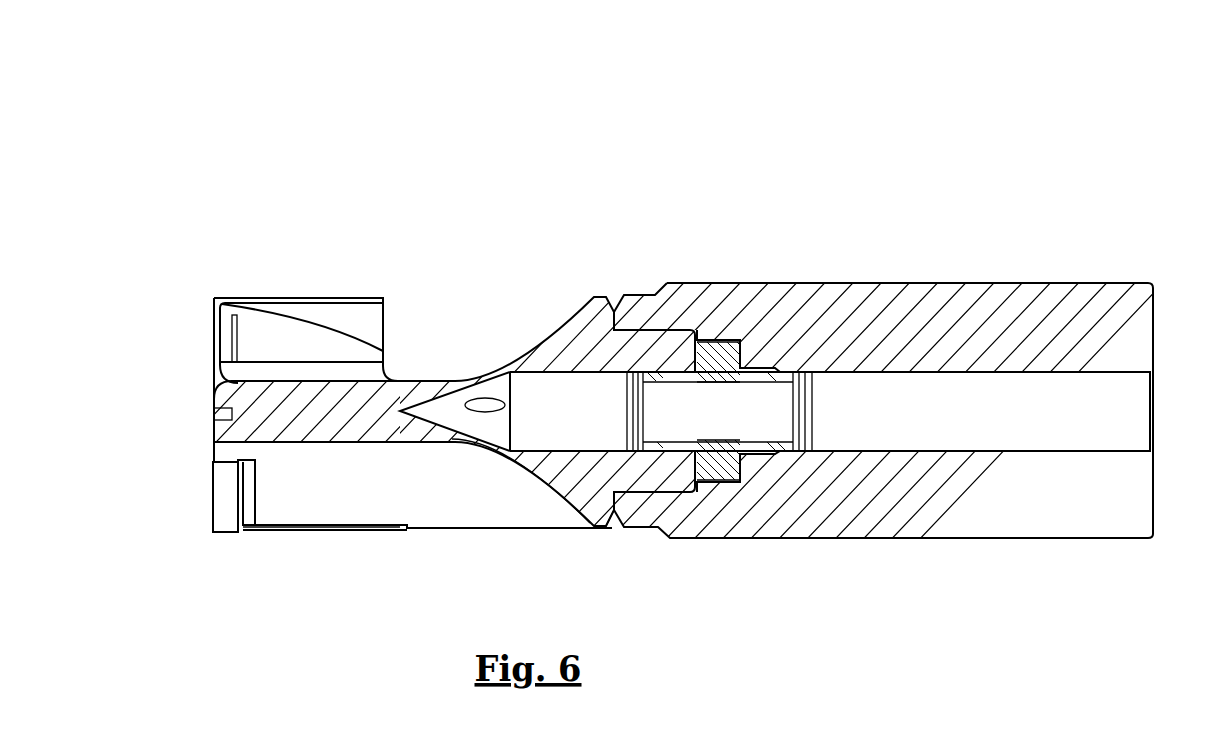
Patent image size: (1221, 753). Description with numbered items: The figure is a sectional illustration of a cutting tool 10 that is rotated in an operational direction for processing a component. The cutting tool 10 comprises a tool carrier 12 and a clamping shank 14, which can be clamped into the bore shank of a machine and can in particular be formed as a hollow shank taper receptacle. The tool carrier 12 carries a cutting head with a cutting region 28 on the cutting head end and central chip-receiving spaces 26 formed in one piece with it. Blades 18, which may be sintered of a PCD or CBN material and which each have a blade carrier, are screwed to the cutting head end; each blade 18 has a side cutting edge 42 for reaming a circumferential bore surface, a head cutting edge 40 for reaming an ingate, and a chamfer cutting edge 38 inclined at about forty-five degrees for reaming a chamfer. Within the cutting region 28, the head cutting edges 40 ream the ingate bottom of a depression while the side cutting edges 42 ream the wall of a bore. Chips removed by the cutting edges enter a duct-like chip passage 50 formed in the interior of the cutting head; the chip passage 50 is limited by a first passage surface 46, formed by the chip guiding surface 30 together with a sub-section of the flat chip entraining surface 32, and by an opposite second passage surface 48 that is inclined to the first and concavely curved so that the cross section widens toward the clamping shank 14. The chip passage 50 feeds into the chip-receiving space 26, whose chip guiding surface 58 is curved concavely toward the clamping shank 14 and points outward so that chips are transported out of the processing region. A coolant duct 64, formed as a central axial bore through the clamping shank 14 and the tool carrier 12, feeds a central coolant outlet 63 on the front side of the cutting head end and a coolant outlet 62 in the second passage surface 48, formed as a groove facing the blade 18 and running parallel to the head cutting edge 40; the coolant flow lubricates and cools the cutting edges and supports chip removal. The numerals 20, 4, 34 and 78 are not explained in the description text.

The cutting tool 10 is at (1102, 170).
The tool carrier 12 is at (314, 212).
The clamping shank 14 is at (899, 281).
The blade 18 is at (156, 546).
The retaining bracket 20 is at (222, 462).
The chip-receiving space 26 is at (465, 318).
The cutting region 28 is at (185, 380).
The front portion 4 is at (183, 380).
The chip guiding surface 30 is at (214, 512).
The chip entraining surface 32 is at (442, 482).
The conical bore 34 is at (540, 350).
The chamfer cutting edge 38 is at (558, 530).
The head cutting edge 40 is at (216, 498).
The side cutting edge 42 is at (238, 532).
The first passage surface 46 is at (268, 478).
The second passage surface 48 is at (262, 337).
The chip passage 50 is at (348, 347).
The chip guiding surface 58 is at (268, 444).
The coolant outlet 62 is at (233, 340).
The central coolant outlet 63 is at (213, 414).
The coolant duct 64 is at (711, 420).
The outer wall 78 is at (214, 318).